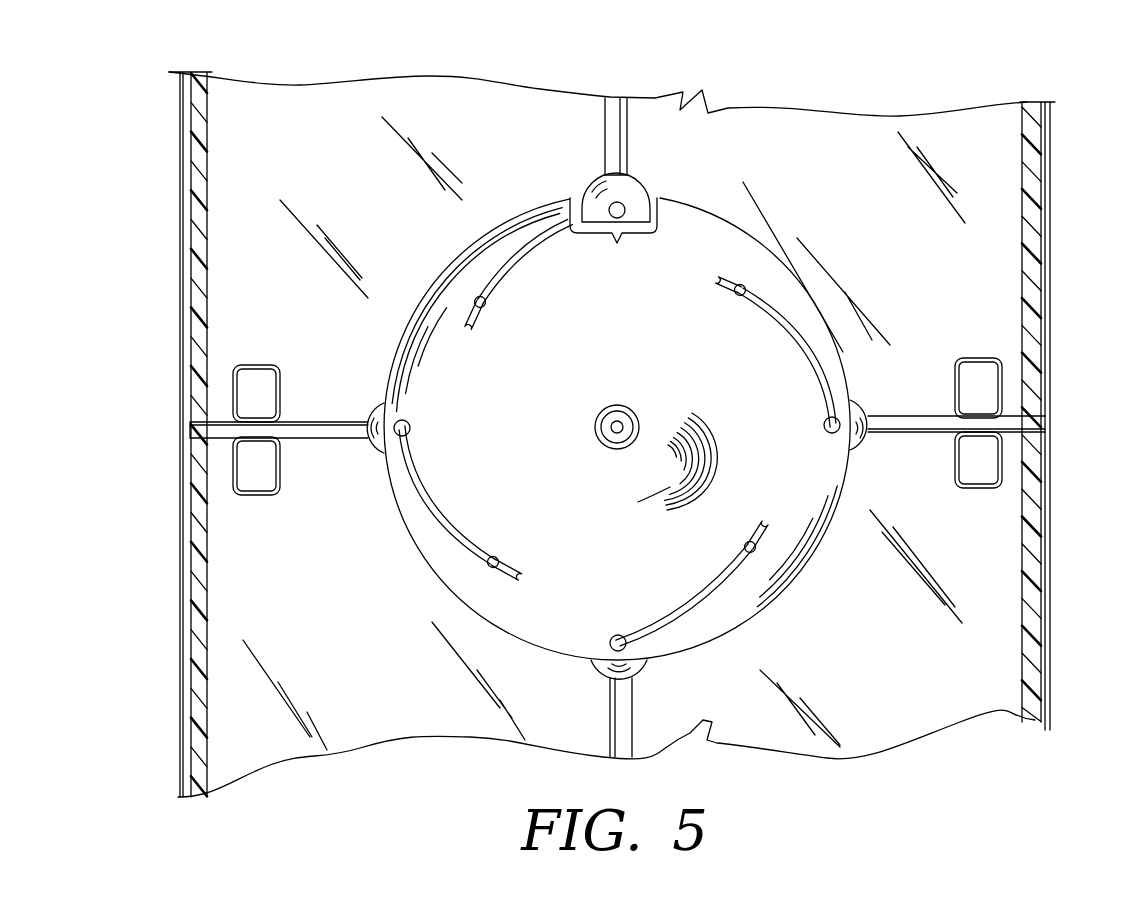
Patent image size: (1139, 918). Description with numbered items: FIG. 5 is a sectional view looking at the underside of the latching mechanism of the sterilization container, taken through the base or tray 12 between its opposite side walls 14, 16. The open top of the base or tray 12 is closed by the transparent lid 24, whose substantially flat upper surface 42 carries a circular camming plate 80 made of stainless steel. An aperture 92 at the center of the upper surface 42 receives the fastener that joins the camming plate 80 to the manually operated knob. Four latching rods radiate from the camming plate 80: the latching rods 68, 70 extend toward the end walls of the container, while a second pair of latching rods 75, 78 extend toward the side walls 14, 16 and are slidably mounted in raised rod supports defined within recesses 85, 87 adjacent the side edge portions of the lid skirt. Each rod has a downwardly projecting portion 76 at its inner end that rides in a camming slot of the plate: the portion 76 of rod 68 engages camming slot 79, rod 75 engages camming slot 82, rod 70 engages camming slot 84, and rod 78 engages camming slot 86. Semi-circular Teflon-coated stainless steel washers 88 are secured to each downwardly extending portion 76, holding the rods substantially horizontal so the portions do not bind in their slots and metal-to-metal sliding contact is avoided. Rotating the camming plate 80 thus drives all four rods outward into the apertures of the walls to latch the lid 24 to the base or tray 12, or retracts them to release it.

The base or tray 12 is at (1045, 247).
The side wall 14 is at (1033, 183).
The side wall 16 is at (190, 272).
The lid 24 is at (963, 145).
The upper surface 42 is at (850, 131).
The latching rod 68 is at (620, 122).
The latching rod 70 is at (618, 700).
The latching rod 75 is at (332, 428).
The downwardly projecting portion 76 is at (624, 206).
The latching rod 78 is at (920, 430).
The camming slot 79 is at (500, 278).
The circular camming plate 80 is at (617, 429).
The camming slot 82 is at (430, 510).
The camming slot 84 is at (723, 588).
The recess 85 is at (983, 365).
The camming slot 86 is at (775, 312).
The recess 87 is at (262, 378).
The semi-circular washer 88 is at (600, 190).
The aperture 92 is at (622, 420).